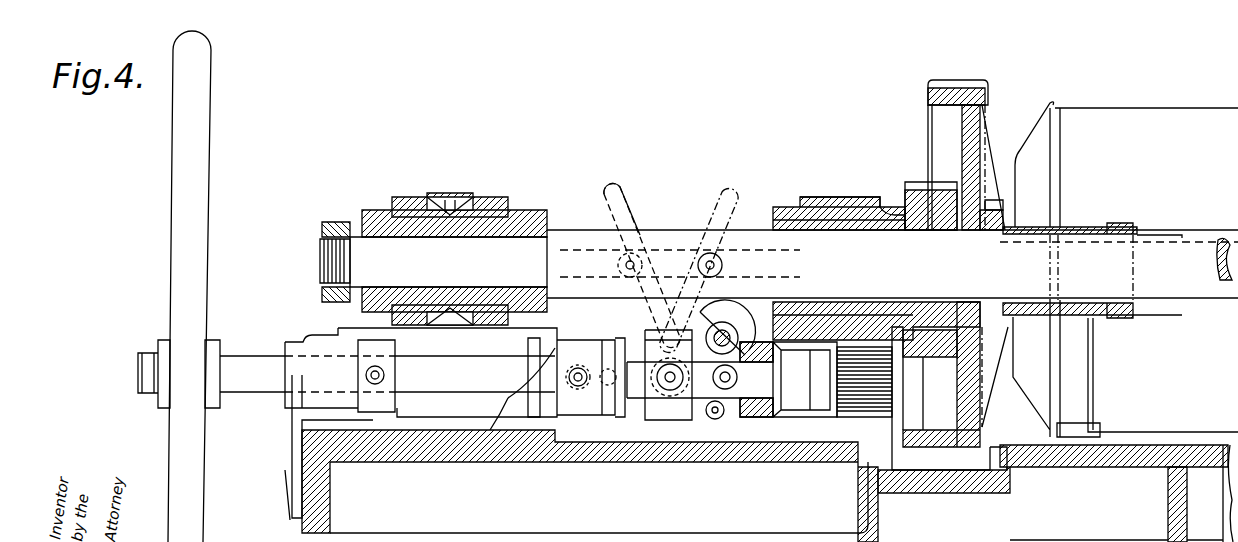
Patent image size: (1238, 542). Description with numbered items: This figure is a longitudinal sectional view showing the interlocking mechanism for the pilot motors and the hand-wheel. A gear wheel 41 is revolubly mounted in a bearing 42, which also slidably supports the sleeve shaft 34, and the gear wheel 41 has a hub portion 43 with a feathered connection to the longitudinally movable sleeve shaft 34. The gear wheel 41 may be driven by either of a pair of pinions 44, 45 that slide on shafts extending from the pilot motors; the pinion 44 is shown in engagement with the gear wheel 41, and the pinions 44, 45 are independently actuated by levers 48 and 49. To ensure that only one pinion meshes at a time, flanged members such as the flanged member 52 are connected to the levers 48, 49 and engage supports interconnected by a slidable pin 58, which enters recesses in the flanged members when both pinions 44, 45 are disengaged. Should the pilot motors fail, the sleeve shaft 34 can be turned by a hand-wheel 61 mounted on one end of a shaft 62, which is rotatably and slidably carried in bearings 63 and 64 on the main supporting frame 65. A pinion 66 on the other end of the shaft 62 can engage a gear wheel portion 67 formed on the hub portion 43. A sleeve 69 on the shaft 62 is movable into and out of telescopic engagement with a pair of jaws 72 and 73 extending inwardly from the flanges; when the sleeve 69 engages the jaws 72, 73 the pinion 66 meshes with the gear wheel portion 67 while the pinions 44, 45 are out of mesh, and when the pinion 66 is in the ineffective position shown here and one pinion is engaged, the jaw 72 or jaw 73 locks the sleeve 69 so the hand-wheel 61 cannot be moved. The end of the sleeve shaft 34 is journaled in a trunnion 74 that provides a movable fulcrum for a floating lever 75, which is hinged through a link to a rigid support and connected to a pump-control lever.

The sleeve shaft 34 is at (1197, 287).
The gear wheel 41 is at (960, 95).
The bearing 42 is at (836, 197).
The hub portion 43 is at (772, 208).
The pinion 44 is at (985, 205).
The pinion 45 is at (870, 218).
The lever 48 is at (728, 208).
The lever 49 is at (615, 197).
The flanged member 52 is at (708, 323).
The slidable pin 58 is at (730, 335).
The hand-wheel 61 is at (207, 276).
The shaft 62 is at (262, 378).
The bearing 63 is at (298, 343).
The bearing 64 is at (792, 463).
The main supporting frame 65 is at (584, 452).
The pinion 66 is at (848, 460).
The gear wheel portion 67 is at (940, 186).
The sleeve 69 is at (580, 344).
The jaw 72 is at (690, 343).
The jaw 73 is at (656, 332).
The trunnion 74 is at (388, 212).
The floating lever 75 is at (497, 205).